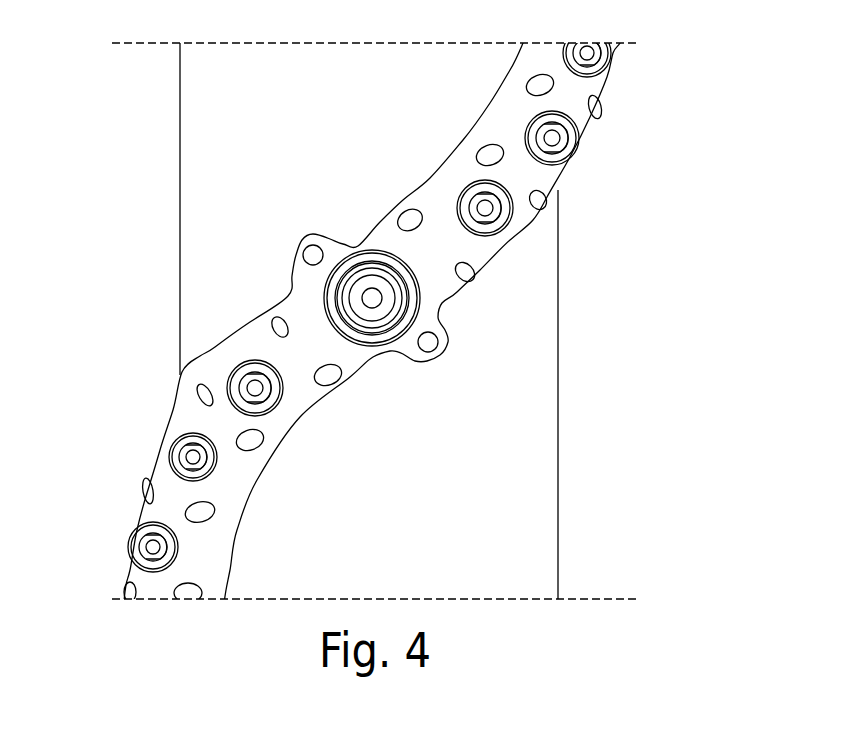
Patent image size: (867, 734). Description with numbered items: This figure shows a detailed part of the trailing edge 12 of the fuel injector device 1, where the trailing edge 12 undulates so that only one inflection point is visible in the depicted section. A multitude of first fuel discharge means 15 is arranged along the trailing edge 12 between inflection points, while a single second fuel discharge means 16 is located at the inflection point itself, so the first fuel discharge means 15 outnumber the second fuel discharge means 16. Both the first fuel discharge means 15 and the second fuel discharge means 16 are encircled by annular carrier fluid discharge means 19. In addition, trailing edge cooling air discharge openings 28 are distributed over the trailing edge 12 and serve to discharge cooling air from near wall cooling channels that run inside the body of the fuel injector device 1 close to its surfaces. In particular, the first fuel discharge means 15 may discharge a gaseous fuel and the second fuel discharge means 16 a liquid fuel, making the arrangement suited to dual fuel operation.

The fuel injector device 1 is at (640, 191).
The trailing edge 12 is at (195, 571).
The first fuel discharge means 15 is at (595, 60).
The second fuel discharge means 16 is at (372, 297).
The annular carrier fluid discharge means 19 is at (580, 55).
The trailing edge cooling air discharge openings 28 is at (540, 198).